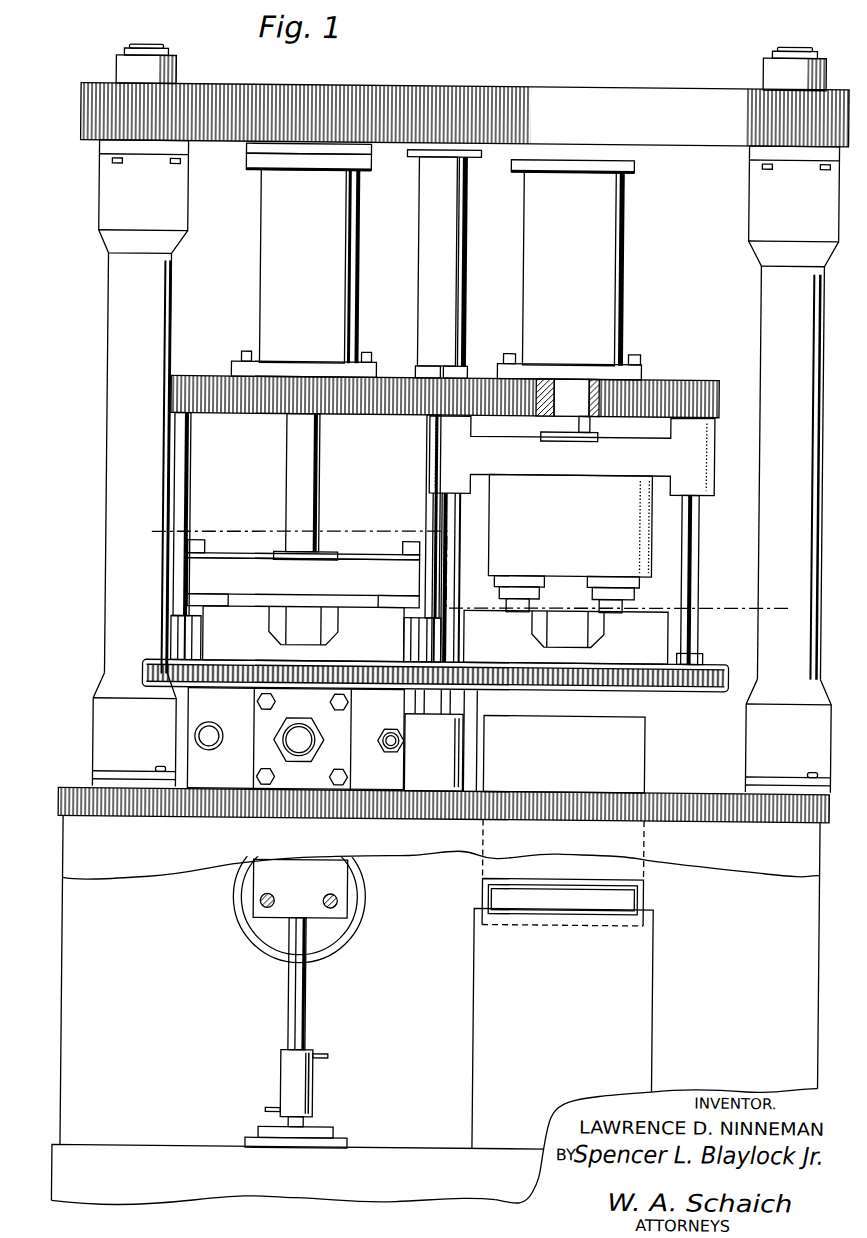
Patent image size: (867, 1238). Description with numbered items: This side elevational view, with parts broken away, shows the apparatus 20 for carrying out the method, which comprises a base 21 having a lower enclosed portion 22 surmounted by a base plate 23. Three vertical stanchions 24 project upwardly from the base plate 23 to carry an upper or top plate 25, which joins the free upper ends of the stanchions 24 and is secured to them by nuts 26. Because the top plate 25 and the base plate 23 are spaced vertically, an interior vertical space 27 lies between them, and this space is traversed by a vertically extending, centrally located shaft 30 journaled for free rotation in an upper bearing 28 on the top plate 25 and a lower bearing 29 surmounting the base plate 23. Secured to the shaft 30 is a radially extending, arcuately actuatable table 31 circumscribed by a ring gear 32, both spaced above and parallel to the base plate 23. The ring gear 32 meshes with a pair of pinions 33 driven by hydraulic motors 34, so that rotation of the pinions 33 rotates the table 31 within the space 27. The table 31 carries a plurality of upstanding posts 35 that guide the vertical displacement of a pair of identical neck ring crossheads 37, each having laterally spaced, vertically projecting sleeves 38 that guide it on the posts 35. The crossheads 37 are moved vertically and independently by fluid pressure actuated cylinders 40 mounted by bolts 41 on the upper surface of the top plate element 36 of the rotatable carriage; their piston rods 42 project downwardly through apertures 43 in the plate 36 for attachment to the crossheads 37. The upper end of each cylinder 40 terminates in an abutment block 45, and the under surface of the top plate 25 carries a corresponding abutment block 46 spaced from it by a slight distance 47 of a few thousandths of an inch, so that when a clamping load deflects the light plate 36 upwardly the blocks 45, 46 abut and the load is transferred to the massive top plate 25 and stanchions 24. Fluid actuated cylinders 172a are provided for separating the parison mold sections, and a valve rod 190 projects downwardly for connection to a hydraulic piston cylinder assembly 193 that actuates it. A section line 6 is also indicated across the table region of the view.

The apparatus 20 is at (615, 86).
The base 21 is at (98, 1192).
The lower enclosed portion 22 is at (80, 859).
The base plate 23 is at (60, 793).
The vertical stanchions 24 is at (796, 430).
The top plate 25 is at (417, 90).
The nuts 26 is at (170, 68).
The interior vertical space 27 is at (186, 280).
The upper bearing 28 is at (410, 157).
The lower bearing 29 is at (456, 706).
The shaft 30 is at (416, 226).
The table 31 is at (509, 655).
The ring gear 32 is at (661, 689).
The pinions 33 is at (413, 683).
The hydraulic motors 34 is at (440, 761).
The posts 35 is at (186, 500).
The top plate element 36 is at (204, 392).
The neck ring crossheads 37 is at (572, 531).
The sleeves 38 is at (430, 458).
The fluid pressure actuated cylinders 40 is at (310, 289).
The bolts 41 is at (243, 353).
The piston rods 42 is at (564, 392).
The apertures 43 is at (553, 418).
The abutment block 45 is at (256, 174).
The abutment block 46 is at (250, 150).
The distance 47 is at (628, 161).
The section line 6- 6 is at (148, 540).
The fluid actuated cylinders 172a is at (297, 741).
The valve rod 190 is at (308, 991).
The hydraulic piston cylinder assembly 193 is at (316, 1084).